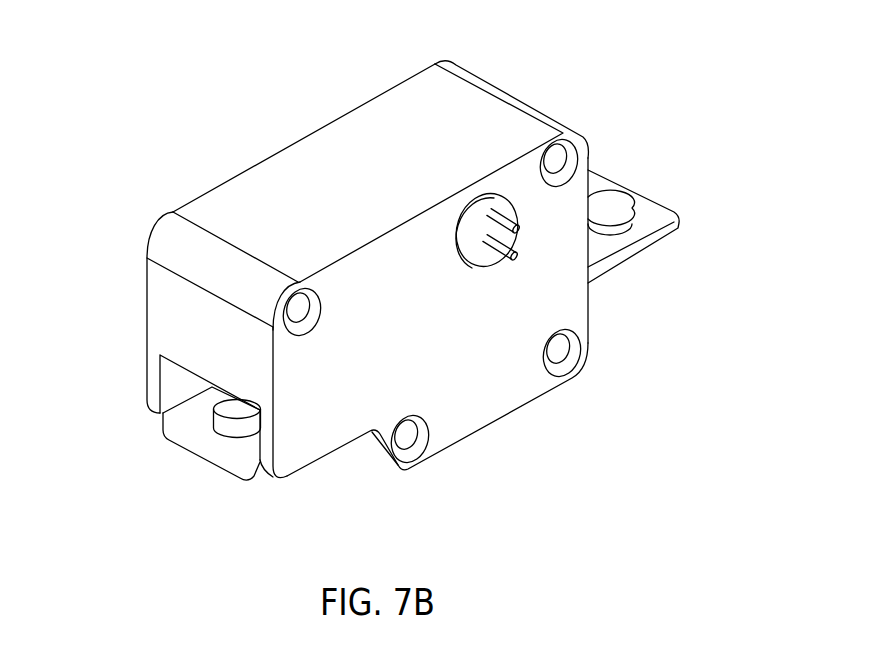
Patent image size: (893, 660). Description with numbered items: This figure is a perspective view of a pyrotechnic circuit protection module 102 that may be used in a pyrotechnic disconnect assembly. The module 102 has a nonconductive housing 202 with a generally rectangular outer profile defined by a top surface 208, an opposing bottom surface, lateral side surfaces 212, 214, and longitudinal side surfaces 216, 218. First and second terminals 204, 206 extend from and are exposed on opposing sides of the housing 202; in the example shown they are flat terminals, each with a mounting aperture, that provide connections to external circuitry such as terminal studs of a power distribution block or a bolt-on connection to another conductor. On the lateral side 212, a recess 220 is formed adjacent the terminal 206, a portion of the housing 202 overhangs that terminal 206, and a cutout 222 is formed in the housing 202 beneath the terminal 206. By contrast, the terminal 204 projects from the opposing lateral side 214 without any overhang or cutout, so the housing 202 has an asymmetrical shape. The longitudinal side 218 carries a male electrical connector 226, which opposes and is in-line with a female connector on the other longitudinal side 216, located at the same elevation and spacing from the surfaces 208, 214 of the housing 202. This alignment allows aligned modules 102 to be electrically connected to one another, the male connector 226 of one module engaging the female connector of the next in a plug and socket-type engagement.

The pyrotechnic circuit protection module 102 is at (601, 67).
The housing 202 is at (258, 151).
The first terminal 204 is at (662, 238).
The second terminal 206 is at (197, 454).
The top surface 208 is at (332, 142).
The lateral side surface 212 is at (162, 323).
The lateral side surface 214 is at (590, 162).
The longitudinal side surface 216 is at (387, 90).
The longitudinal side surface 218 is at (485, 407).
The recess 220 is at (167, 382).
The cutout 222 is at (361, 450).
The male connector 226 is at (476, 252).